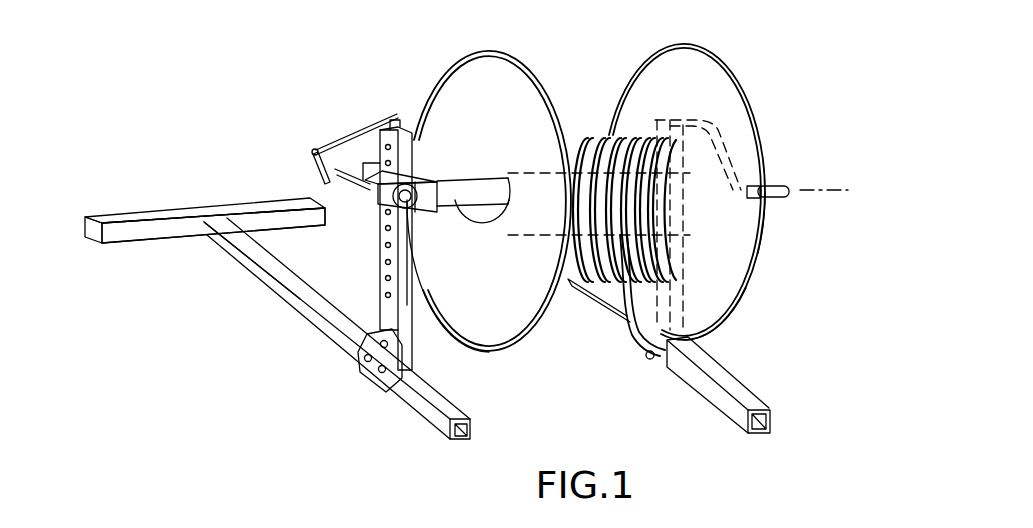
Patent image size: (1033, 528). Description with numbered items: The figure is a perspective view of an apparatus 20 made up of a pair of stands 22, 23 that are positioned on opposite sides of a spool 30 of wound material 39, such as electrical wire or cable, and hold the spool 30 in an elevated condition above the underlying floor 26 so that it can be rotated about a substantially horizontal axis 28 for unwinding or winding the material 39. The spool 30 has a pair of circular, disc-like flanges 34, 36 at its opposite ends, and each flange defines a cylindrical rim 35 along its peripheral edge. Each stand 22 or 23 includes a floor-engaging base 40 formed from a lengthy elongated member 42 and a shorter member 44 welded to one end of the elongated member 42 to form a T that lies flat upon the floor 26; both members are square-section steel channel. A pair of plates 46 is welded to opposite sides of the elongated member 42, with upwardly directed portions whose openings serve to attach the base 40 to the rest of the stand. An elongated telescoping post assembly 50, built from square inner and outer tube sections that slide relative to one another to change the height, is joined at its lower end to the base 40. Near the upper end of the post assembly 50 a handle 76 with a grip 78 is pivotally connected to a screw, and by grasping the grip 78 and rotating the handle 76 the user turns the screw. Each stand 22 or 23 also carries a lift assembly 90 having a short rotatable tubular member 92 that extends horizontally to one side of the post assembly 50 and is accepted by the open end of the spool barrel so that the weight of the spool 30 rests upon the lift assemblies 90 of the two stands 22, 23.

The apparatus 20 is at (306, 104).
The stand 22 is at (273, 287).
The stand 23 is at (735, 380).
The floor 26 is at (175, 248).
The axis 28 is at (835, 190).
The spool 30 is at (690, 44).
The flange 34 is at (565, 315).
The rim 35 is at (492, 350).
The flange 36 is at (754, 253).
The wound material 39 is at (630, 350).
The floor-engaging base 40 is at (440, 407).
The elongated member 42 is at (238, 261).
The shorter member 44 is at (150, 230).
The plate 46 is at (390, 380).
The telescoping post assembly 50 is at (407, 148).
The handle 76 is at (360, 127).
The grip 78 is at (770, 185).
The lift assembly 90 is at (475, 190).
The tubular member 92 is at (497, 190).